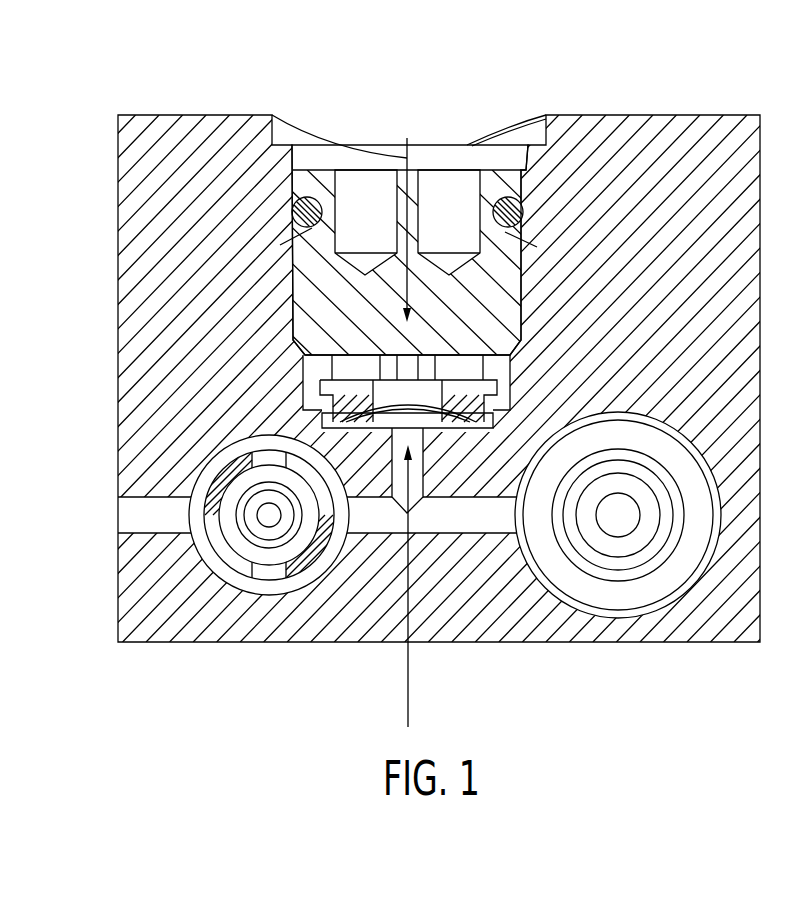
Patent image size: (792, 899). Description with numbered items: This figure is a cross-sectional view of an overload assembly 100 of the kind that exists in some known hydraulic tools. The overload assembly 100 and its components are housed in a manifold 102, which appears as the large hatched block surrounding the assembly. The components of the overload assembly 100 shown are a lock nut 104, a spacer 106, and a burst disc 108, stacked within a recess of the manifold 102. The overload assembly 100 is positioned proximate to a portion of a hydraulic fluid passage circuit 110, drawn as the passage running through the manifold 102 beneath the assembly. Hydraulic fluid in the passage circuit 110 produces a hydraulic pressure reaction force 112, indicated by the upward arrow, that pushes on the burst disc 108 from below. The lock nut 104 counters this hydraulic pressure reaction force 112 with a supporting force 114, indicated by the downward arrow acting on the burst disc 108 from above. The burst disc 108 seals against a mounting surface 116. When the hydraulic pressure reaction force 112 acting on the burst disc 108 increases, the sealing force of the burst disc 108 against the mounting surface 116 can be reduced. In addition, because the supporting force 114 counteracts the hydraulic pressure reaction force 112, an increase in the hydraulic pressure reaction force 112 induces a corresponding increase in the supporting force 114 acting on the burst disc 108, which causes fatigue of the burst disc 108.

The overload assembly 100 is at (396, 368).
The manifold 102 is at (660, 135).
The lock nut 104 is at (330, 315).
The spacer 106 is at (322, 400).
The burst disc 108 is at (335, 412).
The hydraulic fluid passage circuit 110 is at (376, 522).
The hydraulic pressure reaction force 112 is at (410, 677).
The supporting force 114 is at (405, 157).
The mounting surface 116 is at (467, 423).